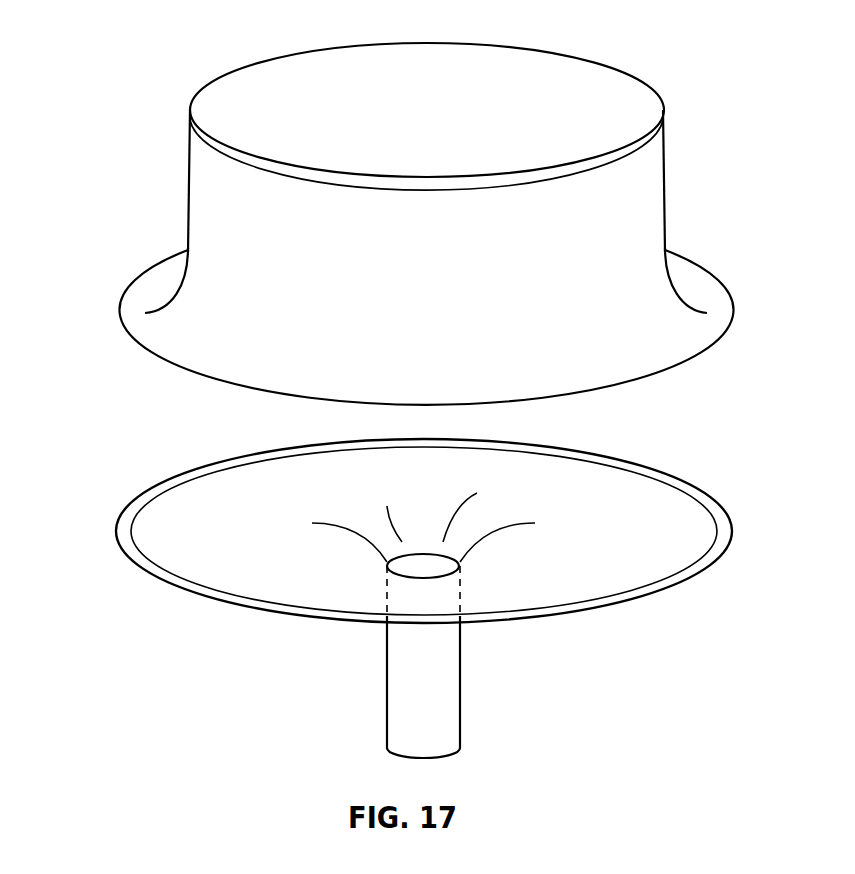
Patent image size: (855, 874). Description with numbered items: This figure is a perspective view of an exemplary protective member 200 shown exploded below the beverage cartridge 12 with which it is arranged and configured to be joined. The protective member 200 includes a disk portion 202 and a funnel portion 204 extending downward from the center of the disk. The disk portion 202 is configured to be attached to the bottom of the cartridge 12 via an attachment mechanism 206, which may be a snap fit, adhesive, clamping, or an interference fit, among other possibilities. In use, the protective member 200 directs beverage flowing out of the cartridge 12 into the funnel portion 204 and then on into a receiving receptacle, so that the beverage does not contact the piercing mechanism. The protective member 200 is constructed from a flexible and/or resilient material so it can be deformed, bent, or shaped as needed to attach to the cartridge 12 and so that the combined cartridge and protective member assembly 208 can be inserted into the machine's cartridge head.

The beverage cartridge 12 is at (373, 273).
The protective member 200 is at (420, 598).
The disk portion 202 is at (610, 582).
The funnel portion 204 is at (448, 662).
The attachment mechanism 206 is at (132, 552).
The combined cartridge and protective member assembly 208 is at (89, 333).